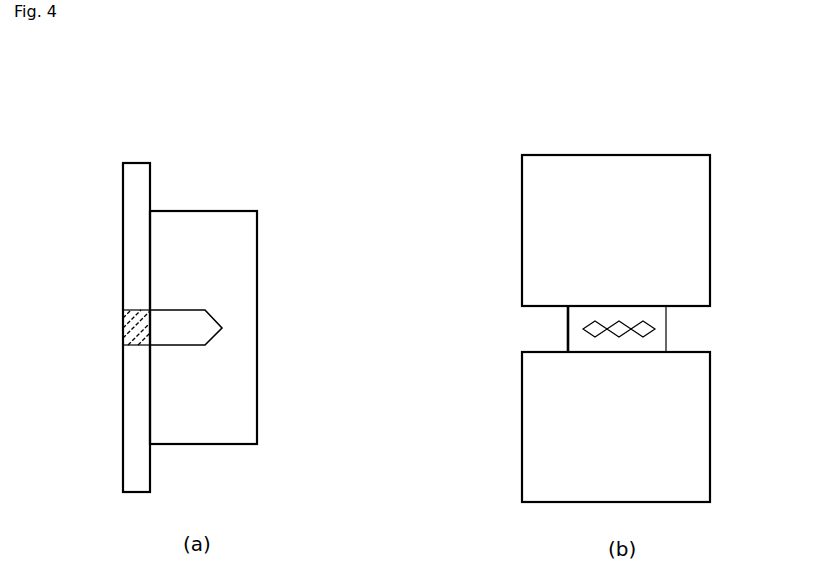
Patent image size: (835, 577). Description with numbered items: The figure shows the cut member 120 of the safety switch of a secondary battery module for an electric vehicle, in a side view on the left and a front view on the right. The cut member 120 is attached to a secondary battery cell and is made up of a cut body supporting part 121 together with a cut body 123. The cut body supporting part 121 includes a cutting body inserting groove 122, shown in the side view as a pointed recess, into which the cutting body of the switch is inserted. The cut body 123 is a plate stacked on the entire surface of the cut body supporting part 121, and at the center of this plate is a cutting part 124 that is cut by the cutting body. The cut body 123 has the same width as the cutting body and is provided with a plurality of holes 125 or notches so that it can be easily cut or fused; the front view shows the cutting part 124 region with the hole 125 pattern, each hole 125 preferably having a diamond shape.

The cut member 120 is at (216, 131).
The cut body supporting part 121 is at (236, 252).
The cutting body inserting groove 122 is at (212, 321).
The cut body 123 is at (135, 190).
The cutting part 124 is at (126, 323).
The hole 125 is at (567, 326).